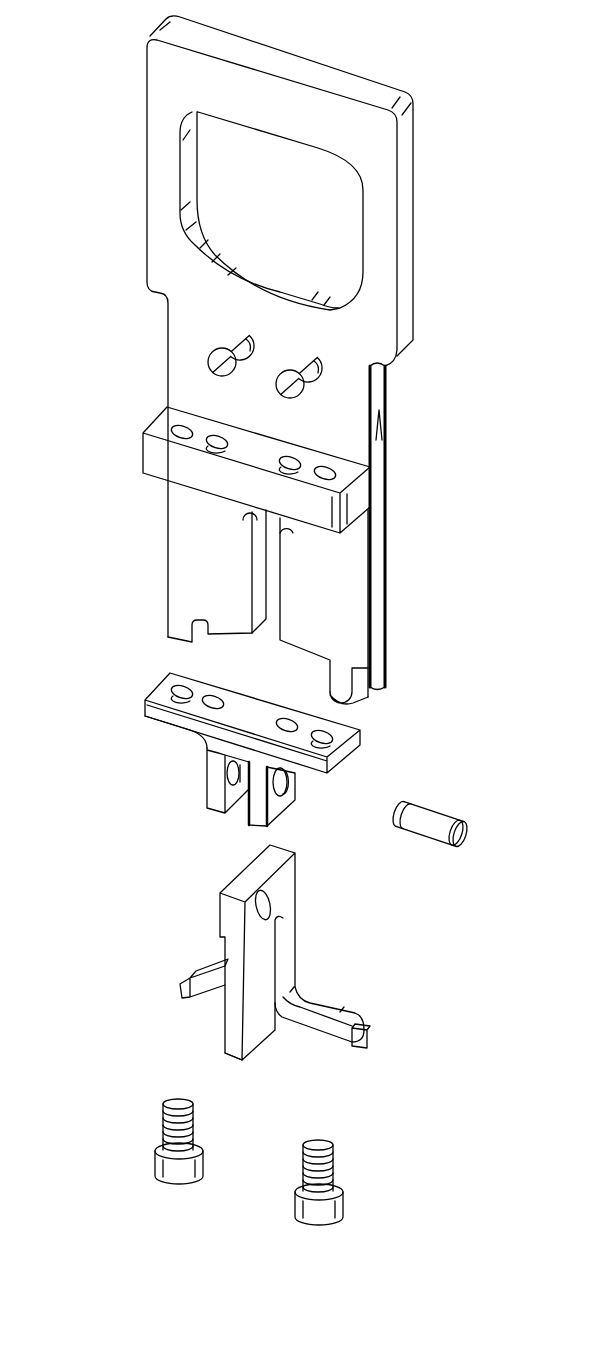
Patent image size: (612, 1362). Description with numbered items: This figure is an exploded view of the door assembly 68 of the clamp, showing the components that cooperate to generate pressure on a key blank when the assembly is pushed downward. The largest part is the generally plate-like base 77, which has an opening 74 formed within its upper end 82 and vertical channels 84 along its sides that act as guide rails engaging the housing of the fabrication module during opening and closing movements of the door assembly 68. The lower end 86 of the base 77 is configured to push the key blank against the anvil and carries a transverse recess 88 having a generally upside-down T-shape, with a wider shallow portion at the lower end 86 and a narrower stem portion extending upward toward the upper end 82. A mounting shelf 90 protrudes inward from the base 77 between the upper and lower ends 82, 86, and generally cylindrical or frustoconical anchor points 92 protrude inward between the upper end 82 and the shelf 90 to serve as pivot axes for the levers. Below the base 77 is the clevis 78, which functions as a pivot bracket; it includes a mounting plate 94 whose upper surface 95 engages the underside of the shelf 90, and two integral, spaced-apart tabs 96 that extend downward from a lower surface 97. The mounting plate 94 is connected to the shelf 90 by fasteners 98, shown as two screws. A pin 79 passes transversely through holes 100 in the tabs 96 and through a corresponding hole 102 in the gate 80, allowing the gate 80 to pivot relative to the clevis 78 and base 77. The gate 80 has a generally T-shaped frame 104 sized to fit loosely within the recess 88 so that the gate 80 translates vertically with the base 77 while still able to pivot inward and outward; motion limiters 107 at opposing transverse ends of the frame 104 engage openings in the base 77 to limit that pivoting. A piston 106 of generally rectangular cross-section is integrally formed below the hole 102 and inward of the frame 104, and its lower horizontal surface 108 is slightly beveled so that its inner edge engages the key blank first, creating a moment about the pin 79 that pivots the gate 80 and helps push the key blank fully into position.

The door assembly 68 is at (486, 82).
The opening 74 is at (197, 236).
The base 77 is at (377, 338).
The clevis 78 is at (123, 740).
The pin 79 is at (468, 833).
The gate 80 is at (124, 937).
The upper end 82 is at (98, 87).
The vertical channels 84 is at (170, 512).
The lower end 86 is at (132, 622).
The transverse recess 88 is at (372, 707).
The mounting shelf 90 is at (358, 498).
The anchor points 92 is at (313, 356).
The mounting plate 94 is at (345, 752).
The upper surface 95 is at (250, 713).
The tabs 96 is at (230, 797).
The lower surface 97 is at (167, 742).
The fasteners 98 is at (160, 1118).
The holes 100 is at (230, 777).
The hole 102 is at (268, 903).
The frame 104 is at (290, 957).
The piston 106 is at (207, 1042).
The motion limiters 107 is at (190, 980).
The lower horizontal surface 108 is at (258, 1062).